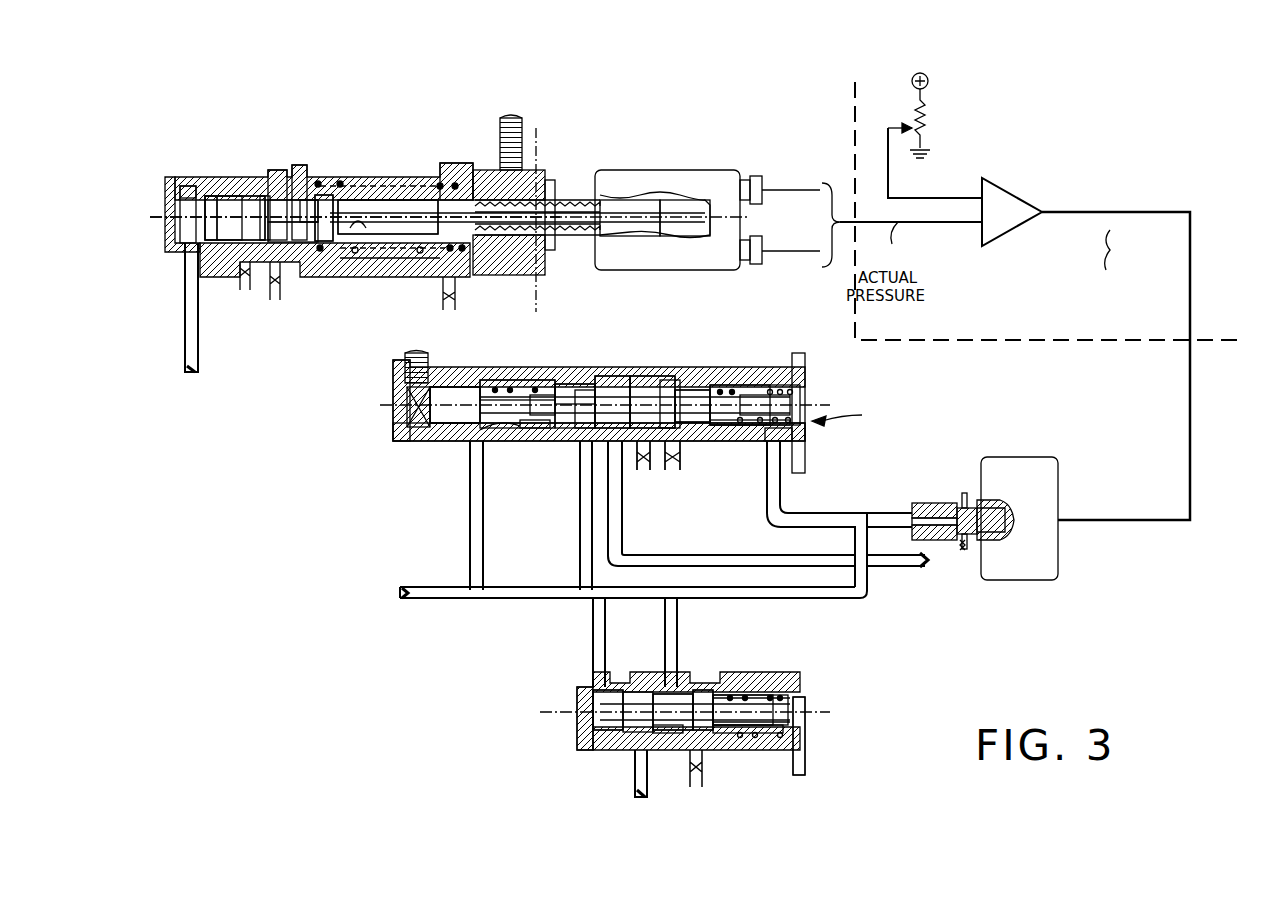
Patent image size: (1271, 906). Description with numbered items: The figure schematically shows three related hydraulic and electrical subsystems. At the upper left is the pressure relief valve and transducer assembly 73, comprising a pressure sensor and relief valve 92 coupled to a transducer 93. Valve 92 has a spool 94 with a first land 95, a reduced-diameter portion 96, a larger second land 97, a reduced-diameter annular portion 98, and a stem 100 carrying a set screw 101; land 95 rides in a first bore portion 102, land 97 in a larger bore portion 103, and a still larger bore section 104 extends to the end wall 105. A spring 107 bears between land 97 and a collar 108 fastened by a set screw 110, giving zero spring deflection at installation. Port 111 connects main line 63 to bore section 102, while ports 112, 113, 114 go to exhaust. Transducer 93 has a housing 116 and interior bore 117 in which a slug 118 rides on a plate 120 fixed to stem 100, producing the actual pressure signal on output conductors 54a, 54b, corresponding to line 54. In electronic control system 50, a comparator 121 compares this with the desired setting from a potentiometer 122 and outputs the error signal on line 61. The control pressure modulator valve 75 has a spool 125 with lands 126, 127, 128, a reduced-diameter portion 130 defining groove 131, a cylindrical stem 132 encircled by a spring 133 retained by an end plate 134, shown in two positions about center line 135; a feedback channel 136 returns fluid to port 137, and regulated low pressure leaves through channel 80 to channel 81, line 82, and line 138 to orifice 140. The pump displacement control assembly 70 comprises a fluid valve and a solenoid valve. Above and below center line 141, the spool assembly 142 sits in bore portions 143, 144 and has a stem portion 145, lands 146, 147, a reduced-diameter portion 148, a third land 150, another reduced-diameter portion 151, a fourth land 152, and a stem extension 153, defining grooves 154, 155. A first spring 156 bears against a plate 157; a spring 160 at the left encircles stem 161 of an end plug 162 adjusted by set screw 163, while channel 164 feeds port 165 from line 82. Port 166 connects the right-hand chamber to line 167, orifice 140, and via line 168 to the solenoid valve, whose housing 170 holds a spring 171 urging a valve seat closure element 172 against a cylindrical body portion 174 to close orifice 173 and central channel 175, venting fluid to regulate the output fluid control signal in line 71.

The electronic control system 50 is at (1047, 230).
The actual line pressure signal line 54 is at (918, 224).
The output conductor 54a is at (790, 189).
The output conductor 54b is at (787, 250).
The error signal line 61 is at (1094, 213).
The main line 63 is at (186, 288).
The pump displacement control assembly 70 is at (719, 396).
The fluid control signal line 71 is at (618, 503).
The pressure relief valve and transducer assembly 73 is at (505, 88).
The control pressure modulator valve 75 is at (545, 700).
The outlet channel 80 is at (678, 640).
The channel 81 is at (578, 506).
The line 82 is at (440, 598).
The pressure sensor and relief valve 92 is at (450, 254).
The transducer 93 is at (603, 252).
The spool 94 is at (298, 245).
The first land 95 is at (214, 195).
The reduced-diameter portion 96 is at (270, 172).
The second land 97 is at (297, 165).
The reduced-diameter annular portion 98 is at (305, 195).
The stem 100 is at (325, 180).
The set screw 101 is at (375, 215).
The first bore portion 102 is at (218, 235).
The larger-diameter bore portion 103 is at (410, 185).
The bore section 104 is at (478, 173).
The end wall 105 is at (548, 150).
The spring 107 is at (363, 260).
The collar 108 is at (510, 258).
The set screw 110 is at (525, 124).
The port 111 is at (184, 188).
The port 112 is at (235, 195).
The port 113 is at (273, 180).
The port 114 is at (451, 161).
The housing 116 is at (700, 171).
The interior bore 117 is at (700, 242).
The slug 118 is at (644, 242).
The plate 120 is at (148, 215).
The comparator 121 is at (1013, 227).
The potentiometer 122 is at (900, 120).
The spool 125 is at (718, 738).
The first land 126 is at (617, 694).
The second land 127 is at (652, 740).
The land 128 is at (698, 690).
The reduced-diameter portion 130 is at (666, 730).
The groove 131 is at (655, 700).
The cylindrical stem 132 is at (745, 694).
The spring 133 is at (773, 690).
The end plate 134 is at (806, 748).
The center line 135 is at (806, 710).
The feedback channel 136 is at (593, 643).
The port 137 is at (587, 682).
The line 138 is at (712, 598).
The orifice 140 is at (800, 597).
The center line 141 is at (396, 422).
The spool assembly 142 is at (710, 461).
The first bore portion 143 is at (507, 392).
The second bore portion 144 is at (726, 438).
The stem portion 145 is at (540, 397).
The first land 146 is at (568, 382).
The second land 147 is at (574, 388).
The reduced-diameter portion 148 is at (611, 385).
The third land 150 is at (640, 379).
The reduced-diameter portion 151 is at (666, 379).
The fourth land 152 is at (687, 390).
The stem extension 153 is at (752, 403).
The groove 154 is at (637, 450).
The groove 155 is at (675, 458).
The first spring 156 is at (734, 395).
The plate 157 is at (806, 368).
The spring 160 is at (531, 427).
The stem 161 is at (462, 423).
The end plug 162 is at (446, 372).
The set screw 163 is at (398, 385).
The channel 164 is at (468, 487).
The port 165 is at (485, 423).
The port 166 is at (778, 441).
The line 167 is at (824, 512).
The line 168 is at (878, 512).
The housing 170 is at (1060, 468).
The spring 171 is at (1018, 506).
The valve seat closure element 172 is at (968, 506).
The orifice 173 is at (950, 506).
The cylindrical body portion 174 is at (926, 506).
The central channel 175 is at (934, 540).